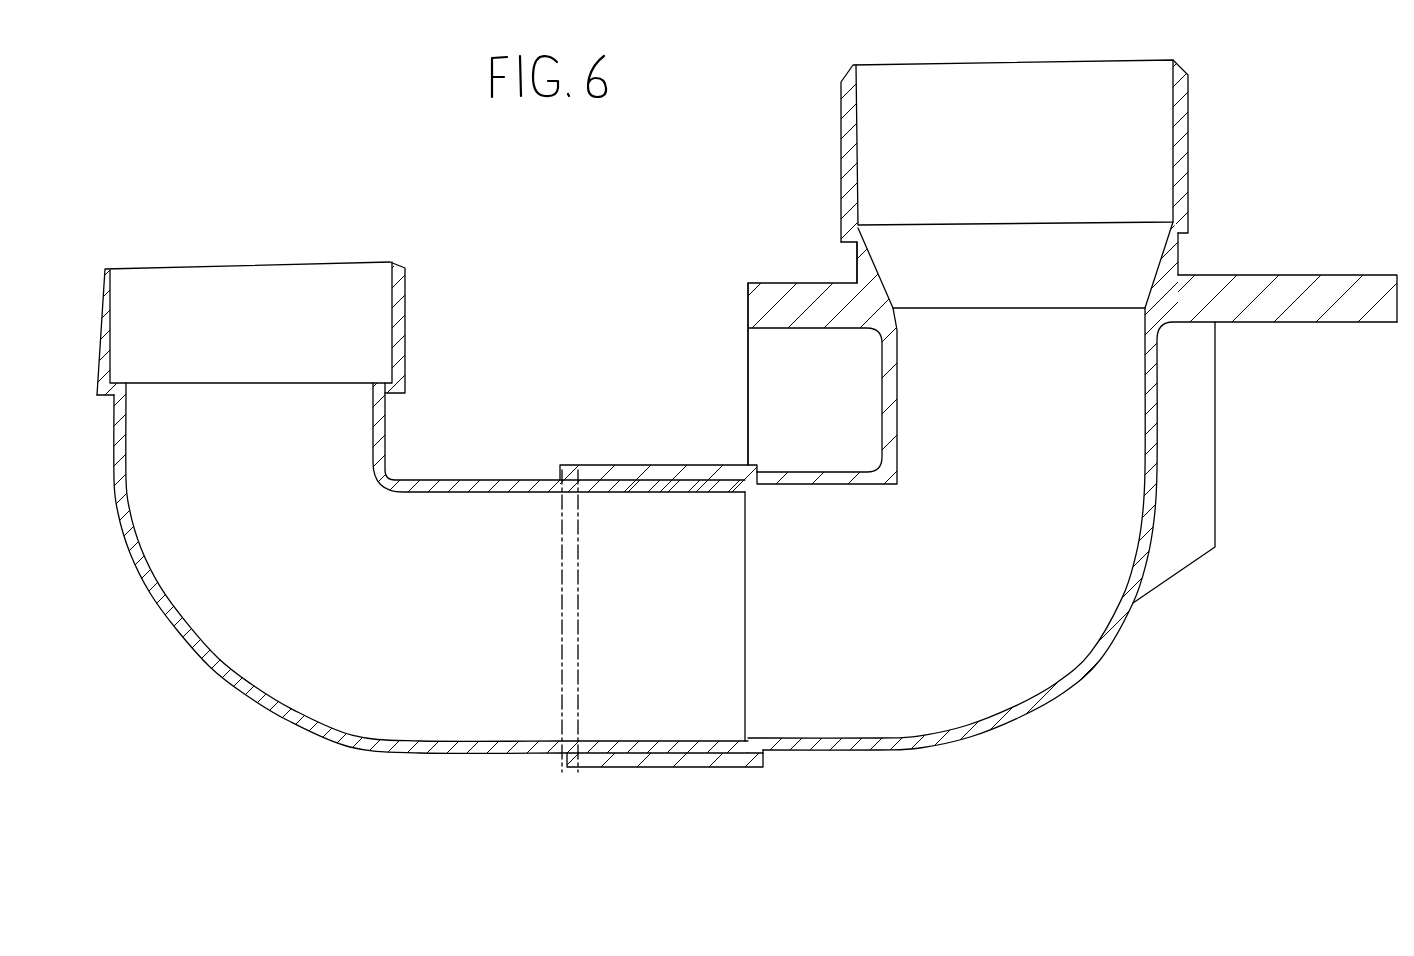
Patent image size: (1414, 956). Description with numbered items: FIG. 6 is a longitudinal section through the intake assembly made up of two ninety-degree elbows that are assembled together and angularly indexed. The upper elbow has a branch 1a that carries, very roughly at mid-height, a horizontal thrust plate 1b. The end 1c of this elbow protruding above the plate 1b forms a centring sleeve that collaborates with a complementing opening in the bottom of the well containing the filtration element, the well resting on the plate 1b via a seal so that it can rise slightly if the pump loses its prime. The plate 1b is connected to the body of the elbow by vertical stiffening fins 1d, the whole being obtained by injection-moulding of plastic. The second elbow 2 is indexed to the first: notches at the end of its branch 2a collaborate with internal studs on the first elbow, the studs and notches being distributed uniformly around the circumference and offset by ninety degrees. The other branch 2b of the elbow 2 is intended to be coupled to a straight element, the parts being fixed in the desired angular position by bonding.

The branch 1a is at (1157, 490).
The horizontal thrust plate 1b is at (1305, 292).
The centring sleeve 1c is at (1182, 127).
The vertical stiffening fins 1d is at (770, 392).
The 90° elbow 2 is at (494, 472).
The branch of the elbow 2a is at (718, 748).
The other branch of the elbow 2b is at (408, 312).